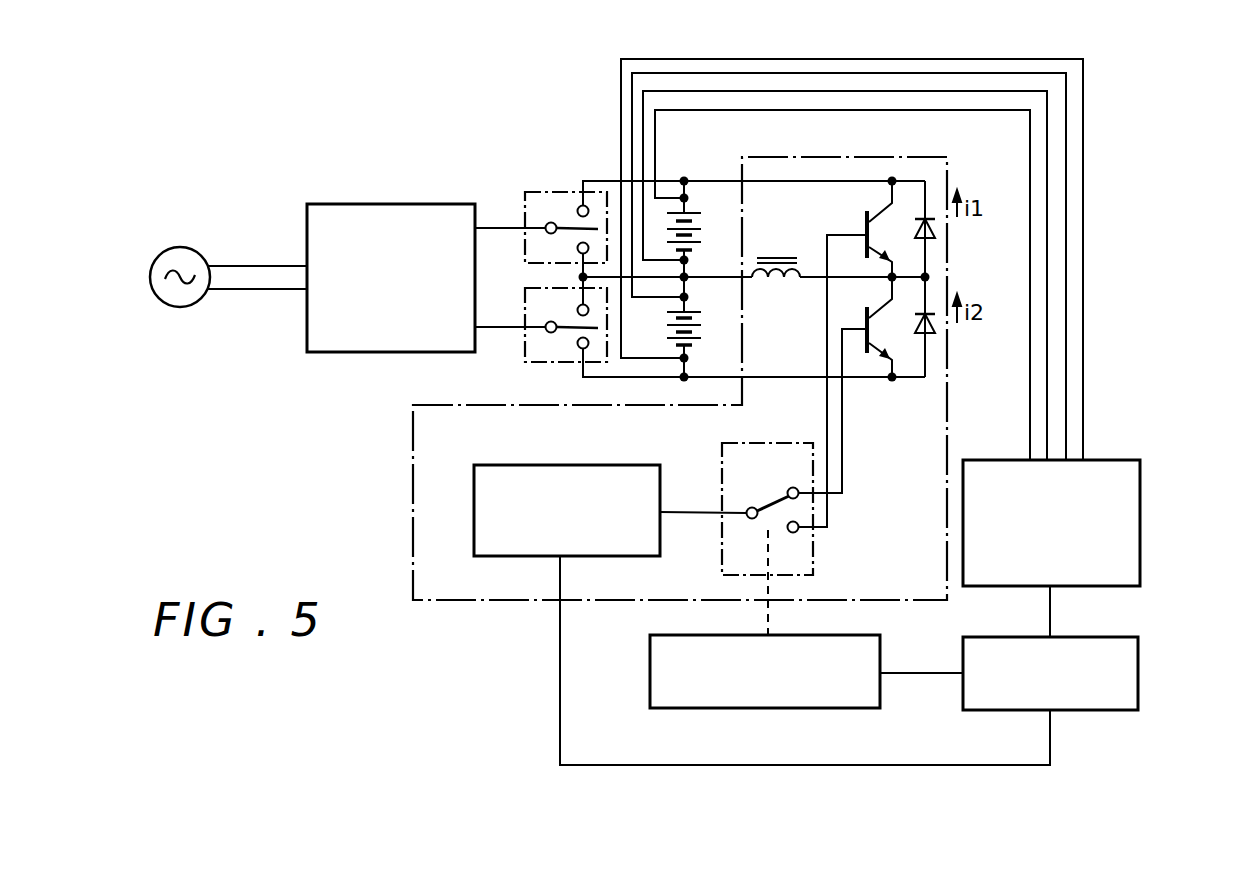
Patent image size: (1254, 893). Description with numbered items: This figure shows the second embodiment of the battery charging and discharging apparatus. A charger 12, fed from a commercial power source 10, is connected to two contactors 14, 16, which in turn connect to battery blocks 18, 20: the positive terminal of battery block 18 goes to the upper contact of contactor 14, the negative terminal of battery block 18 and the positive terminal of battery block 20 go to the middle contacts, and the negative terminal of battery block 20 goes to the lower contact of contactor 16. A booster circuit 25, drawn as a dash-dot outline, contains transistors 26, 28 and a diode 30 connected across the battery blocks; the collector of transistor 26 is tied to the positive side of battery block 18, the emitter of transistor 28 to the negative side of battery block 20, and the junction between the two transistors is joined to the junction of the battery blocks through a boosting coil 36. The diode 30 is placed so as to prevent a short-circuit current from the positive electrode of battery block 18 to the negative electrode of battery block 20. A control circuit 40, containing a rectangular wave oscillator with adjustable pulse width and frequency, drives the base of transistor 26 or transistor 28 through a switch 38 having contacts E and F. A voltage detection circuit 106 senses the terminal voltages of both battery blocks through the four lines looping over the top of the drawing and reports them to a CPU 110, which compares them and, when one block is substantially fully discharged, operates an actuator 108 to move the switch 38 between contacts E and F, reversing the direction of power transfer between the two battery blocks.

The commercial power source 10 is at (180, 247).
The charger 12 is at (393, 204).
The contactor 14 is at (540, 190).
The contactor 16 is at (541, 368).
The battery block 18 is at (713, 236).
The battery block 20 is at (713, 330).
The booster circuit 25 is at (810, 157).
The transistor 26 is at (861, 228).
The transistor 28 is at (862, 327).
The diode 30 is at (937, 233).
The boosting coil 36 is at (771, 258).
The switch 38 is at (745, 441).
The control circuit 40 is at (590, 465).
The voltage detection circuit 106 is at (1140, 557).
The actuator 108 is at (718, 710).
The CPU 110 is at (1070, 712).